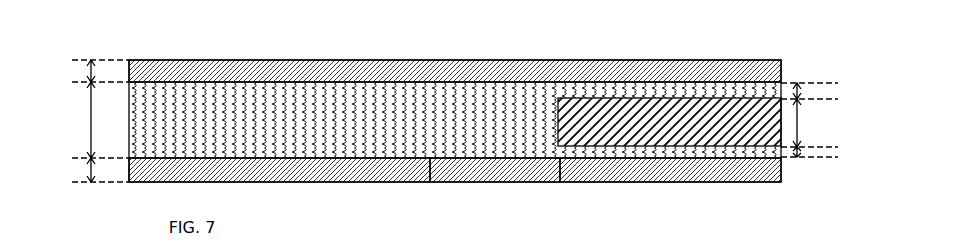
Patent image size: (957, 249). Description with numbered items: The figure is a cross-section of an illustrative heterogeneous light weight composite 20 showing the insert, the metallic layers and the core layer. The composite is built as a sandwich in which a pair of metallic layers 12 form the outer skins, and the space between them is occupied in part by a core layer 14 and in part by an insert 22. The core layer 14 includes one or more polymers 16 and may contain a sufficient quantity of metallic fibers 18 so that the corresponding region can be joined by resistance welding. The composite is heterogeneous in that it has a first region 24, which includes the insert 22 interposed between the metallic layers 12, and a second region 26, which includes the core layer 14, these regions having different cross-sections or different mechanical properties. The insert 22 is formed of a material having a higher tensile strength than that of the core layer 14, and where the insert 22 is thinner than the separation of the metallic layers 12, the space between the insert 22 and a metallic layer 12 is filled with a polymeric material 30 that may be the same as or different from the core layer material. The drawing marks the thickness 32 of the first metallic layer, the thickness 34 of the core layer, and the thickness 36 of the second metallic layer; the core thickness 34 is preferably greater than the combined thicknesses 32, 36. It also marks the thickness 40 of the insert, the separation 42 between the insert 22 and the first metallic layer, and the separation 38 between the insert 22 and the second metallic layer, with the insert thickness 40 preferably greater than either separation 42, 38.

The metallic layer 12 is at (313, 72).
The core layer 14 is at (372, 105).
The polymer 16 is at (412, 105).
The metallic fibers 18 is at (462, 105).
The light weight composite 20 is at (566, 28).
The insert 22 is at (592, 162).
The first region 24 is at (650, 180).
The second region 26 is at (470, 178).
The polymeric material 30 is at (692, 90).
The thickness of the first metallic layer 32 is at (88, 64).
The thickness of the core layer 34 is at (89, 118).
The thickness of the second metallic layer 36 is at (87, 167).
The separation between the insert and the second metallic layer 38 is at (800, 152).
The thickness of the insert 40 is at (798, 112).
The separation between the insert and the first metallic layer 42 is at (801, 90).